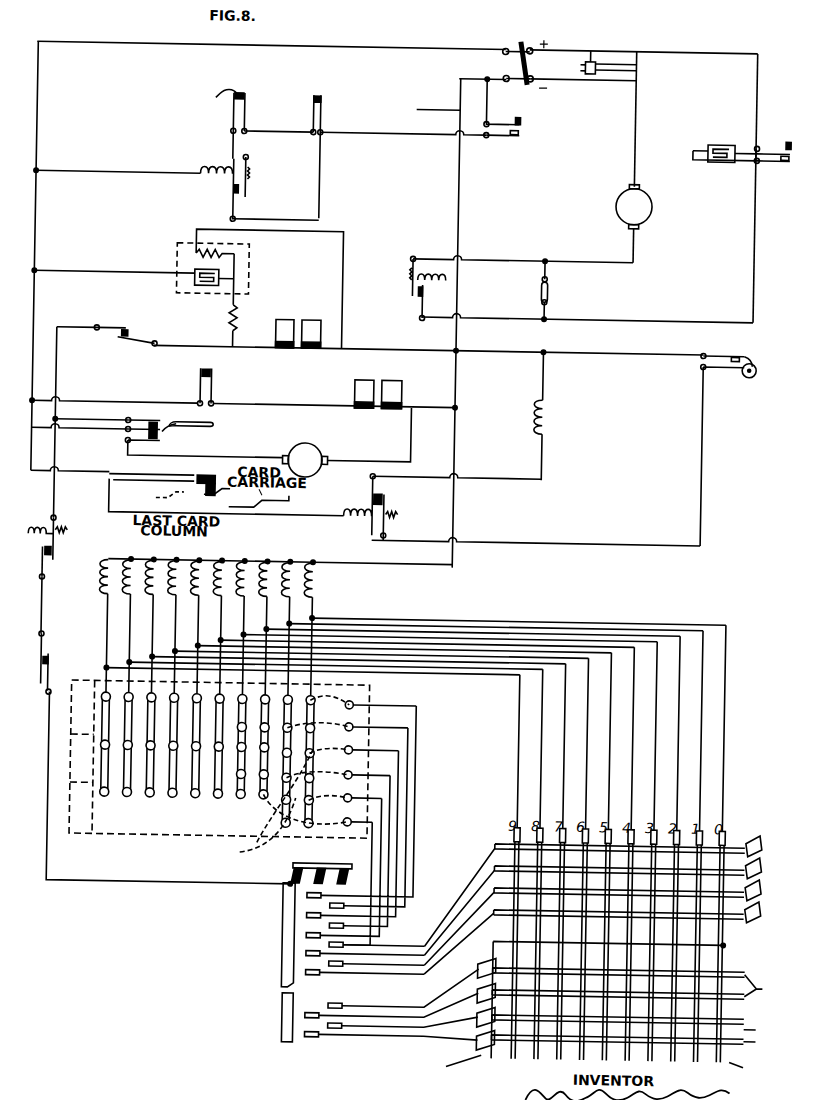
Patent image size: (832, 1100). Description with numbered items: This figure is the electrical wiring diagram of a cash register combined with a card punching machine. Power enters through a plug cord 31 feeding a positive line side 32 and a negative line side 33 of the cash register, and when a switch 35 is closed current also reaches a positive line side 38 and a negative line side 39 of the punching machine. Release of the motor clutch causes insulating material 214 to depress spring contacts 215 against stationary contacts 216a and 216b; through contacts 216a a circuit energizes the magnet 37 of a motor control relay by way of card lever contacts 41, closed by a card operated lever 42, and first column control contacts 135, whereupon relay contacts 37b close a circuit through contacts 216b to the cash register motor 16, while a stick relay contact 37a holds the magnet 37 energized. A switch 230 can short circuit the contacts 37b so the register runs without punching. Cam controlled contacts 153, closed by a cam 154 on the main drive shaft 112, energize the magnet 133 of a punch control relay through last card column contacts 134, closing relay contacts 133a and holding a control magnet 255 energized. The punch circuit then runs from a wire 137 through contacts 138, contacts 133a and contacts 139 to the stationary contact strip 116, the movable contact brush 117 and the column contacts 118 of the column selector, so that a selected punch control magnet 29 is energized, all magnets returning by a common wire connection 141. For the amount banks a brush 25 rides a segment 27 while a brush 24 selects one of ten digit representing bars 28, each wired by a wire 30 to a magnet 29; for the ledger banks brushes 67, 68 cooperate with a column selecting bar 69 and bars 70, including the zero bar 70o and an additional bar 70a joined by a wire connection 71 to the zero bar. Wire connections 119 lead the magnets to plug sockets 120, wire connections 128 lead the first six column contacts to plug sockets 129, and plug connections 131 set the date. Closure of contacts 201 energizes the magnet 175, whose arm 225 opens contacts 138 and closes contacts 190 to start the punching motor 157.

The motor 16 is at (608, 206).
The brush 24 is at (758, 832).
The brush 25 is at (767, 870).
The segment 27 is at (500, 845).
The contact bars 28 is at (728, 830).
The punch control magnets 29 is at (262, 566).
The wires 30 is at (508, 642).
The plug cord 31 is at (582, 56).
The positive line side 32 is at (688, 54).
The negative line side 33 is at (632, 128).
The switch 35 is at (494, 48).
The magnet of motor control relay 37 is at (200, 170).
The stick relay contact 37a is at (234, 201).
The relay contacts 37b is at (406, 298).
The positive line side 38 is at (423, 46).
The negative line side 39 is at (427, 109).
The card lever contacts 41 is at (240, 92).
The card operated lever 42 is at (211, 90).
The brush 67 is at (496, 962).
The brush 68 is at (466, 1010).
The column selecting bar 69 is at (637, 984).
The bars 70 is at (524, 1072).
The additional bar 70a is at (451, 1068).
The zero bar 70o is at (750, 1072).
The wire connection 71 is at (735, 942).
The main drive shaft 112 is at (753, 362).
The stationary contact strip 116 is at (287, 957).
The movable contact brush 117 is at (326, 860).
The column contacts 118 is at (340, 920).
The wire connections 119 is at (132, 679).
The plug sockets 120 is at (150, 802).
The wire connections 128 is at (384, 838).
The plug sockets 129 is at (364, 755).
The plug connections 131 is at (356, 702).
The magnet of punch control relay 133 is at (31, 531).
The relay contacts 133a is at (50, 558).
The last card column contacts 134 is at (195, 481).
The first column control contacts 135 is at (314, 93).
The wire 137 is at (92, 436).
The contacts 138 is at (143, 422).
The contacts 139 is at (46, 663).
The common wire connection 141 is at (404, 568).
The cam controlled contacts 153 is at (725, 350).
The cam 154 is at (738, 370).
The motor 157 is at (306, 445).
The magnet 175 is at (350, 398).
The contacts 190 is at (160, 445).
The contacts 201 is at (212, 380).
The insulating material 214 is at (515, 118).
The spring contacts 215 is at (498, 120).
The stationary contact 216a is at (497, 137).
The stationary contact 216b is at (770, 158).
The arm 225 is at (187, 422).
The switch 230 is at (545, 288).
The control magnet 255 is at (548, 408).